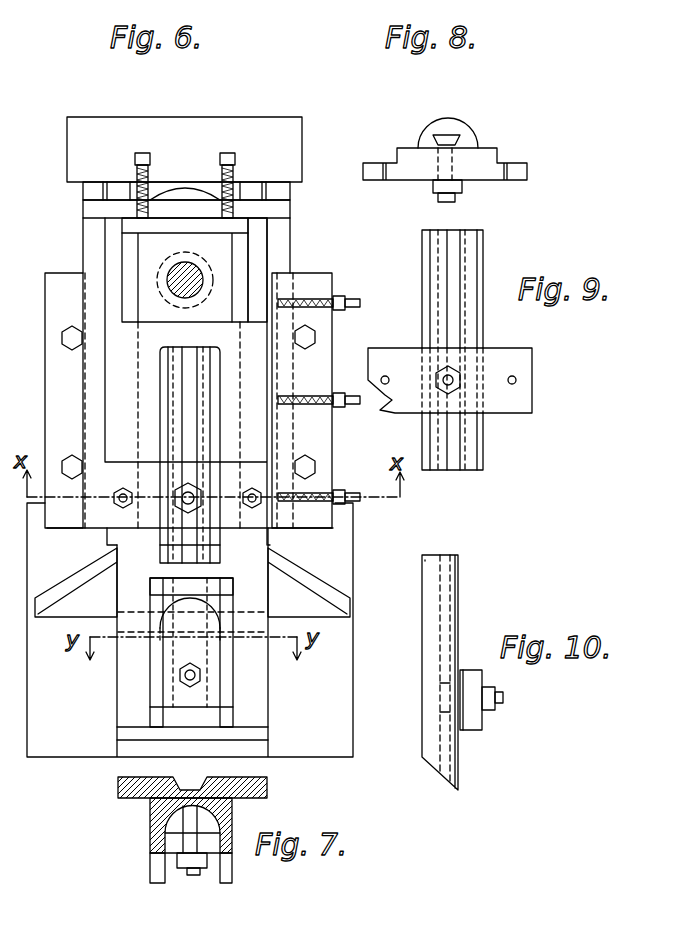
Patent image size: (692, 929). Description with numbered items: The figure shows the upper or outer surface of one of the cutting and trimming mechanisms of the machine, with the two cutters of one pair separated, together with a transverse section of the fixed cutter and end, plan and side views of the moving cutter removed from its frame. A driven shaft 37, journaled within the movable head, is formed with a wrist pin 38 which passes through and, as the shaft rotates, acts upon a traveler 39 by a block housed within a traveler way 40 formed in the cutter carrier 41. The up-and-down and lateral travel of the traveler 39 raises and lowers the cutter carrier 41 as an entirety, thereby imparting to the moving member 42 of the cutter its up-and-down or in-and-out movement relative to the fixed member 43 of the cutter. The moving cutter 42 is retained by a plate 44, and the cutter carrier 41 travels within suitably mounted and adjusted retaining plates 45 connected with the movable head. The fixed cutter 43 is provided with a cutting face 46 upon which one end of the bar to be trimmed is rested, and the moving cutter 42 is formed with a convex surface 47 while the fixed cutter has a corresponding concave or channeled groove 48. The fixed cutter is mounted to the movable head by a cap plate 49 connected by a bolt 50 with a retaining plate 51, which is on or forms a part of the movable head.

In FIG. 6, the driven shaft 37 is at (165, 295).
In FIG. 6, the wrist pin 38 is at (187, 265).
In FIG. 6, the traveler 39 is at (150, 245).
In FIG. 6, the traveler way 40 is at (242, 242).
In FIG. 6, the cutter carrier 41 is at (188, 381).
In FIG. 6, the moving member of the cutter 42 is at (208, 456).
In FIG. 8, the moving member of the cutter 42 is at (445, 120).
In FIG. 9, the moving member of the cutter 42 is at (425, 270).
In FIG. 10, the moving member of the cutter 42 is at (448, 597).
In FIG. 6, the fixed member of the cutter 43 is at (225, 628).
In FIG. 7, the fixed member of the cutter 43 is at (150, 822).
In FIG. 6, the plate 44 is at (112, 470).
In FIG. 8, the plate 44 is at (483, 165).
In FIG. 9, the plate 44 is at (450, 380).
In FIG. 10, the plate 44 is at (480, 722).
In FIG. 6, the retaining plates 45 is at (202, 400).
In FIG. 6, the cutting face 46 is at (218, 590).
In FIG. 8, the convex surface 47 is at (470, 122).
In FIG. 10, the convex surface 47 is at (422, 636).
In FIG. 6, the concave or channeled groove 48 is at (178, 605).
In FIG. 7, the concave or channeled groove 48 is at (215, 835).
In FIG. 6, the cap plate 49 is at (225, 683).
In FIG. 7, the cap plate 49 is at (165, 845).
In FIG. 6, the bolt 50 is at (178, 679).
In FIG. 7, the bolt 50 is at (190, 870).
In FIG. 6, the retaining plate 51 is at (150, 683).
In FIG. 7, the retaining plate 51 is at (118, 786).